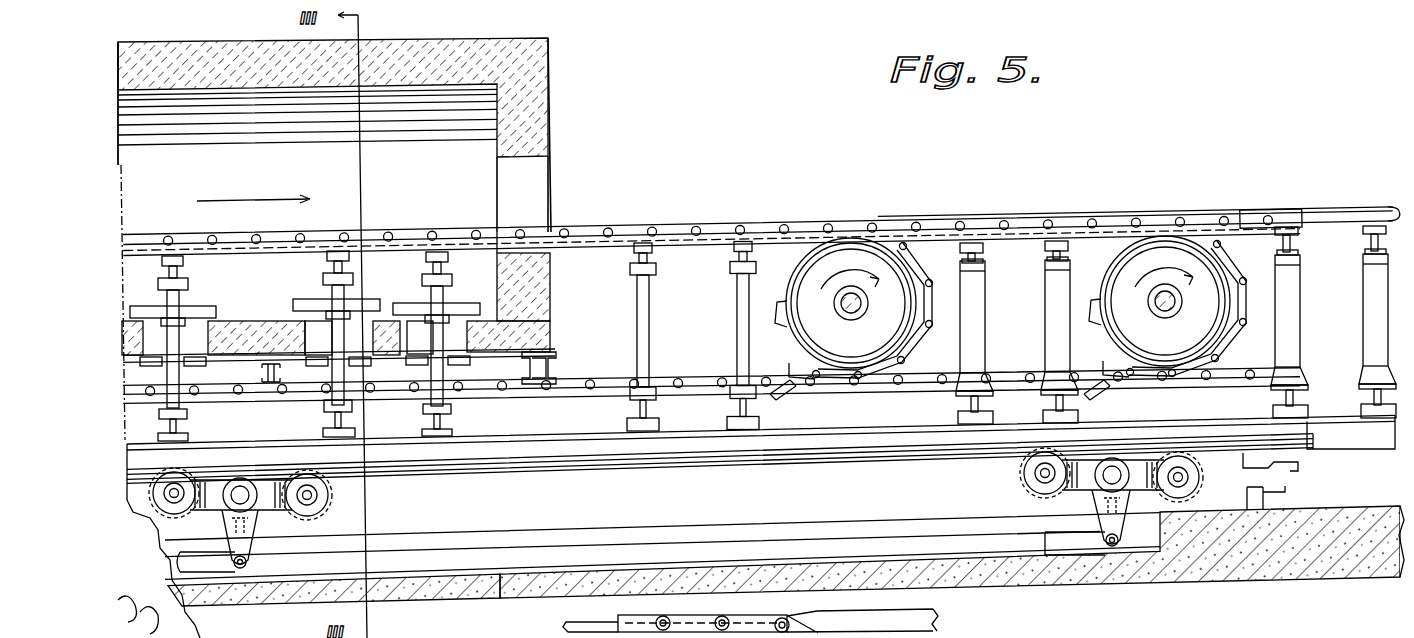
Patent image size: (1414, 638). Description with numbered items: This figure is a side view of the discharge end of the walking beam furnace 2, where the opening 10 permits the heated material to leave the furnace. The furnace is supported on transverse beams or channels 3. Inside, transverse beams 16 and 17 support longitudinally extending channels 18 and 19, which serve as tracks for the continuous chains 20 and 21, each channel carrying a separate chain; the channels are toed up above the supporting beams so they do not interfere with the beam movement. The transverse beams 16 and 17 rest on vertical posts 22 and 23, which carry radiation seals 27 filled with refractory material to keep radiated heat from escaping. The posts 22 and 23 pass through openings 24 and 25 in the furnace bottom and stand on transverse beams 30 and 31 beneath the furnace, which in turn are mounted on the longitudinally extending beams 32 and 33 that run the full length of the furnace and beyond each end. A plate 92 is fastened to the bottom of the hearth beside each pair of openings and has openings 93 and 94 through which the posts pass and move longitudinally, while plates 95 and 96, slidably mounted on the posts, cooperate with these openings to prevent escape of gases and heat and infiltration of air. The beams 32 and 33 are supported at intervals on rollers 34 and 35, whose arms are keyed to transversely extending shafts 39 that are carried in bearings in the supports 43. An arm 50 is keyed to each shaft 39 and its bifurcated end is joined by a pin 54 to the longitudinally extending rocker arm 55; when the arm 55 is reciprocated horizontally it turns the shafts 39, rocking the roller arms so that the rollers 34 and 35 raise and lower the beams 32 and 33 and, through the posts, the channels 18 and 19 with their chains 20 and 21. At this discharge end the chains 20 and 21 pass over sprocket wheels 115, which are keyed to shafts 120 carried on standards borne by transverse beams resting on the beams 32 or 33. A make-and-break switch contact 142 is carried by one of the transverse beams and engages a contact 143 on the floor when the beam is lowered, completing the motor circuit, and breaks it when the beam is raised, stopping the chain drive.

The furnace 2 is at (535, 89).
The opening 10 is at (533, 170).
The longitudinally extending beams or channels 19 is at (369, 255).
The longitudinally extending beams or channels 18 is at (453, 230).
The chain 20 is at (400, 232).
The transverse beam 16 is at (330, 260).
The transverse beam 17 is at (448, 261).
The post 22 is at (332, 287).
The post 23 is at (443, 287).
The radiation seal 27 is at (372, 301).
The opening 24 is at (227, 338).
The opening 25 is at (339, 341).
The transverse beams or channels 3 is at (276, 368).
The opening 94 is at (149, 370).
The plate 96 is at (192, 364).
The opening 93 is at (317, 369).
The plate 95 is at (366, 364).
The plate 92 is at (445, 367).
The chain 21 is at (1188, 378).
The transverse beam 31 is at (188, 419).
The transverse beam 30 is at (324, 418).
The longitudinally extending beam 32 is at (845, 447).
The longitudinally extending beam 33 is at (900, 462).
The longitudinally extending arm 55 is at (700, 540).
The transversely extending shaft 39 is at (240, 480).
The shaft 120 is at (856, 318).
The sprocket wheel 115 is at (812, 333).
The roller 34 is at (162, 507).
The roller 35 is at (332, 496).
The support 43 is at (258, 520).
The pin 54 is at (248, 562).
The arm 50 is at (228, 542).
The contact 142 is at (1284, 475).
The contact 143 is at (1290, 492).